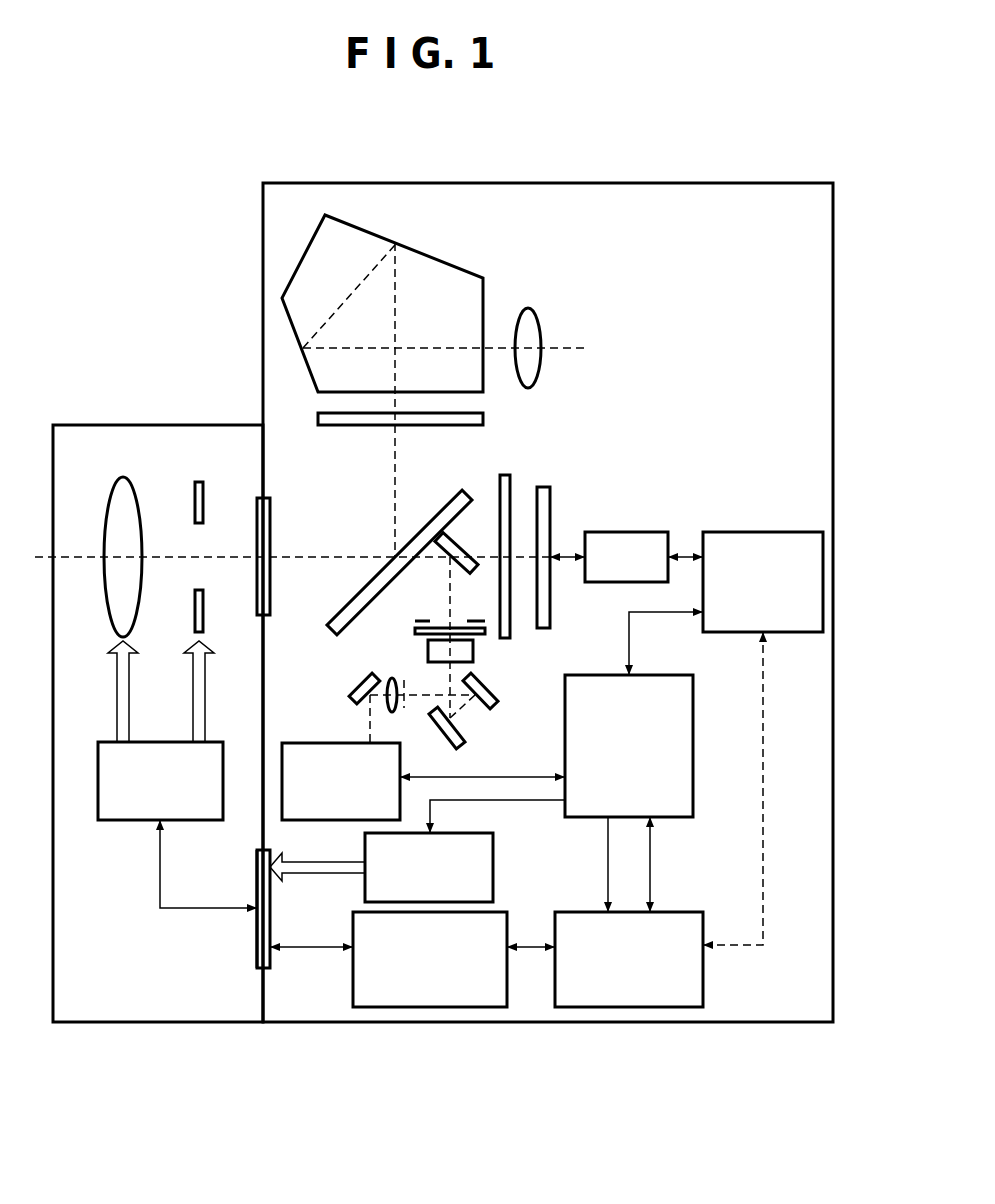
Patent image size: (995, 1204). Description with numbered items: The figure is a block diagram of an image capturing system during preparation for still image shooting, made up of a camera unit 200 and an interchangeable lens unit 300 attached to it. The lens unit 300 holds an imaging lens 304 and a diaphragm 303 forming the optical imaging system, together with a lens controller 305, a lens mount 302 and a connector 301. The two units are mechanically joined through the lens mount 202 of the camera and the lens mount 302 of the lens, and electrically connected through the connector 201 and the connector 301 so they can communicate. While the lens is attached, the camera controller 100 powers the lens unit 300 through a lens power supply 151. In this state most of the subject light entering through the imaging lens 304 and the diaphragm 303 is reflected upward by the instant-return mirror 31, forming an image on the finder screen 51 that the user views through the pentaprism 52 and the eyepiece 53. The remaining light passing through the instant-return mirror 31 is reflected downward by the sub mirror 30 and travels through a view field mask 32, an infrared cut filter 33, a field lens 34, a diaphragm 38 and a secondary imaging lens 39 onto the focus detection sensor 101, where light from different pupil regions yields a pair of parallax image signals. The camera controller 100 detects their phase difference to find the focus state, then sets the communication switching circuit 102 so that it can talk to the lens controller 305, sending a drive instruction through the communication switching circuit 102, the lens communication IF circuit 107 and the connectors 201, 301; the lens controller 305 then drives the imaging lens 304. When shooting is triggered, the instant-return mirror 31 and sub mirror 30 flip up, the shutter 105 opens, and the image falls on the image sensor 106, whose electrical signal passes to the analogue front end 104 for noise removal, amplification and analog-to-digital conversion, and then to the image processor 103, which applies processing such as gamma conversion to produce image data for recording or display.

The camera unit 200 is at (793, 183).
The lens unit 300 is at (88, 425).
The pentaprism 52 is at (442, 258).
The eyepiece 53 is at (528, 307).
The finder screen 51 is at (484, 419).
The instant-return mirror 31 is at (457, 495).
The sub mirror 30 is at (460, 547).
The view field mask 32 is at (422, 620).
The infrared cut filter 33 is at (414, 630).
The field lens 34 is at (473, 652).
The secondary imaging lens 39 is at (391, 681).
The diaphragm 38 is at (406, 706).
The shutter 105 is at (510, 483).
The image sensor 106 is at (550, 492).
The analogue front end (AFE) 104 is at (648, 532).
The image processor 103 is at (795, 532).
The camera controller 100 is at (693, 747).
The focus detection sensor 101 is at (296, 743).
The lens power supply 151 is at (493, 867).
The lens communication IF circuit 107 is at (507, 914).
The communication switching circuit 102 is at (703, 914).
The connector 201 is at (270, 892).
The connector 301 is at (257, 962).
The lens mount 202 is at (270, 520).
The lens mount 302 is at (257, 575).
The diaphragm 303 is at (200, 482).
The imaging lens 304 is at (126, 479).
The lens controller 305 is at (120, 820).